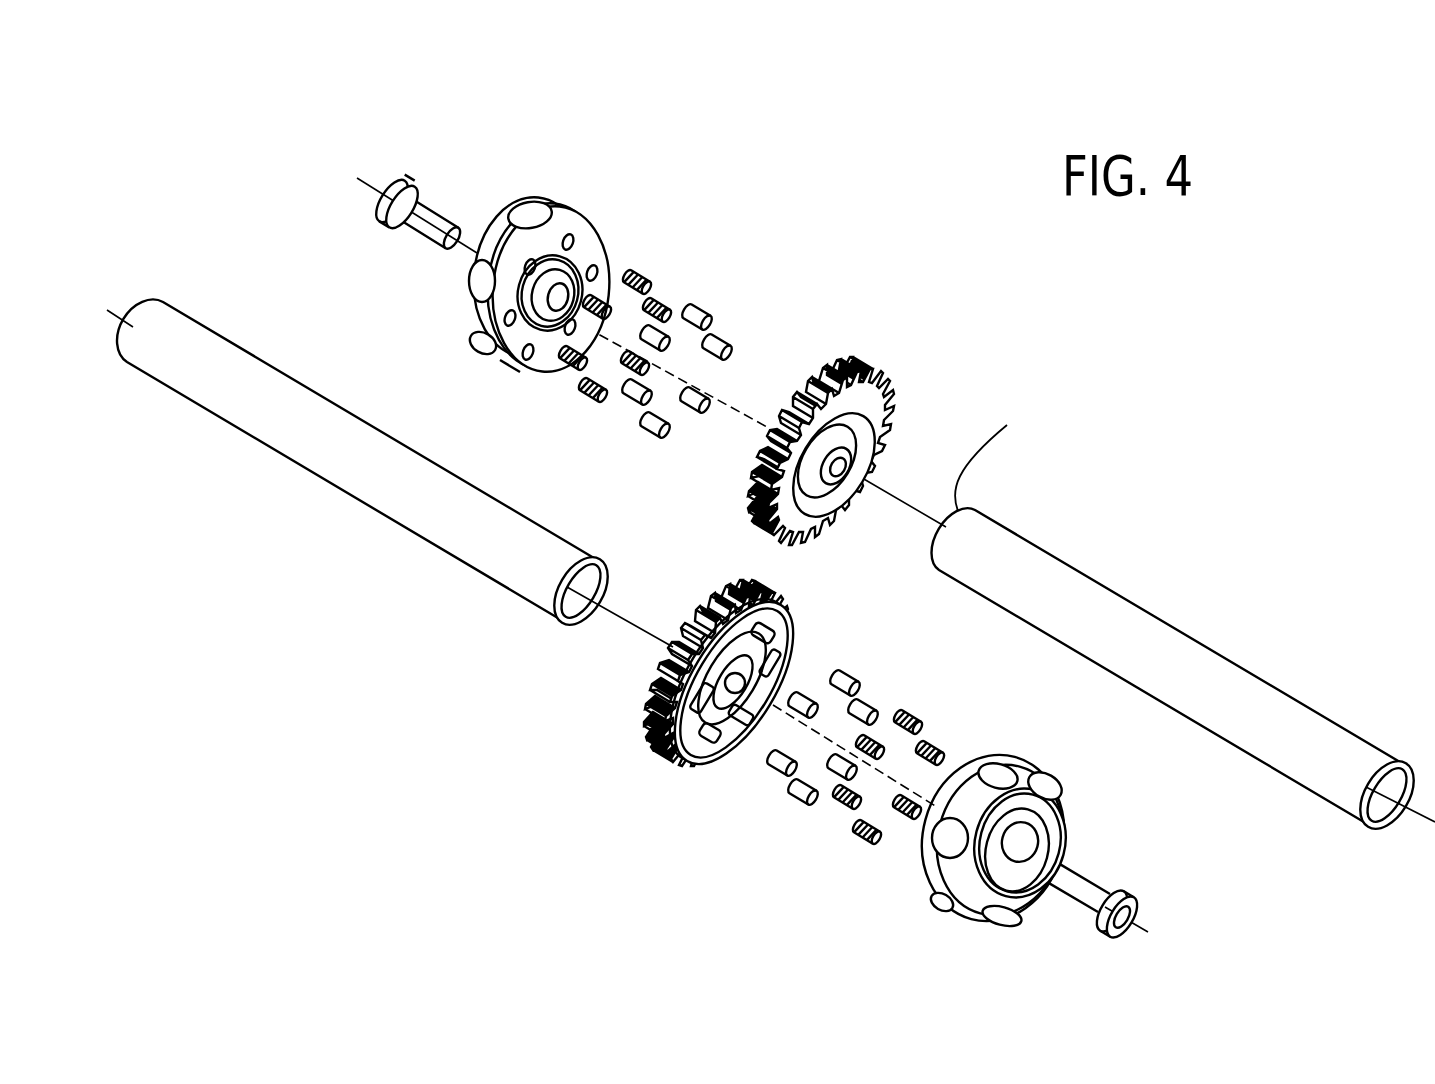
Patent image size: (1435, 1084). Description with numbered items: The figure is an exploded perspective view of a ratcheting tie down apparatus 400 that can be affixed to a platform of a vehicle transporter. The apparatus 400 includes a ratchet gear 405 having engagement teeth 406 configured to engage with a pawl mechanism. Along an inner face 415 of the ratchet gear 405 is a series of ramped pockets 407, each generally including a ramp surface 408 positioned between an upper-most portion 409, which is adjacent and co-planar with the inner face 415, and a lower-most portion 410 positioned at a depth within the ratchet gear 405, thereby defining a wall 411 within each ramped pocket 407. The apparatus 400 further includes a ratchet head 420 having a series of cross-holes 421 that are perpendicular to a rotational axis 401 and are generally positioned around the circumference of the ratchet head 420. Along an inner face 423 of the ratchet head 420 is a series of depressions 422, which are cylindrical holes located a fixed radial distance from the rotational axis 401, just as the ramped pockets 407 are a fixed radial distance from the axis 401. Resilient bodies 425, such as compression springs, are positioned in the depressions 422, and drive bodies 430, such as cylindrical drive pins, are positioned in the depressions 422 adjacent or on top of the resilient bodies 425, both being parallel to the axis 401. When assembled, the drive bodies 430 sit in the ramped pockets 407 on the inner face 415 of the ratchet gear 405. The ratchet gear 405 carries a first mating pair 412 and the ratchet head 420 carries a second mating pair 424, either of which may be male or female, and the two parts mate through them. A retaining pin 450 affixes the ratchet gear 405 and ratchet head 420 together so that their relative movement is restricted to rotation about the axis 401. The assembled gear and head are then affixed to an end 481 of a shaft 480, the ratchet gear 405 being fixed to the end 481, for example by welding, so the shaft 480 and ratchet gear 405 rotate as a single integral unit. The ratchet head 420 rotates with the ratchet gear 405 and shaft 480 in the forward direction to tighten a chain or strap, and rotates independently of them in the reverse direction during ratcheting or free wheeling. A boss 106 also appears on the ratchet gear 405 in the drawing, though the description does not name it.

The ratcheting tie down apparatus 400 is at (305, 197).
The rotational axis 401 is at (1422, 817).
The ratchet gear 405 is at (865, 385).
The engagement teeth 406 is at (835, 385).
The gear hub 106 is at (836, 508).
The ramped pockets 407 is at (787, 620).
The ramp surface 408 is at (702, 628).
The upper-most portion 409 is at (722, 592).
The lower-most portion 410 is at (785, 655).
The wall 411 is at (690, 717).
The first mating pair 412 is at (703, 740).
The inner face 415 is at (773, 610).
The ratchet head 420 is at (565, 215).
The cross-holes 421 is at (460, 285).
The depressions 422 is at (512, 373).
The inner face 423 is at (478, 348).
The second mating pair 424 is at (605, 265).
The resilient bodies 425 is at (707, 393).
The drive bodies 430 is at (727, 337).
The retaining pin 450 is at (443, 217).
The shaft 480 is at (1166, 618).
The end 481 is at (1021, 438).